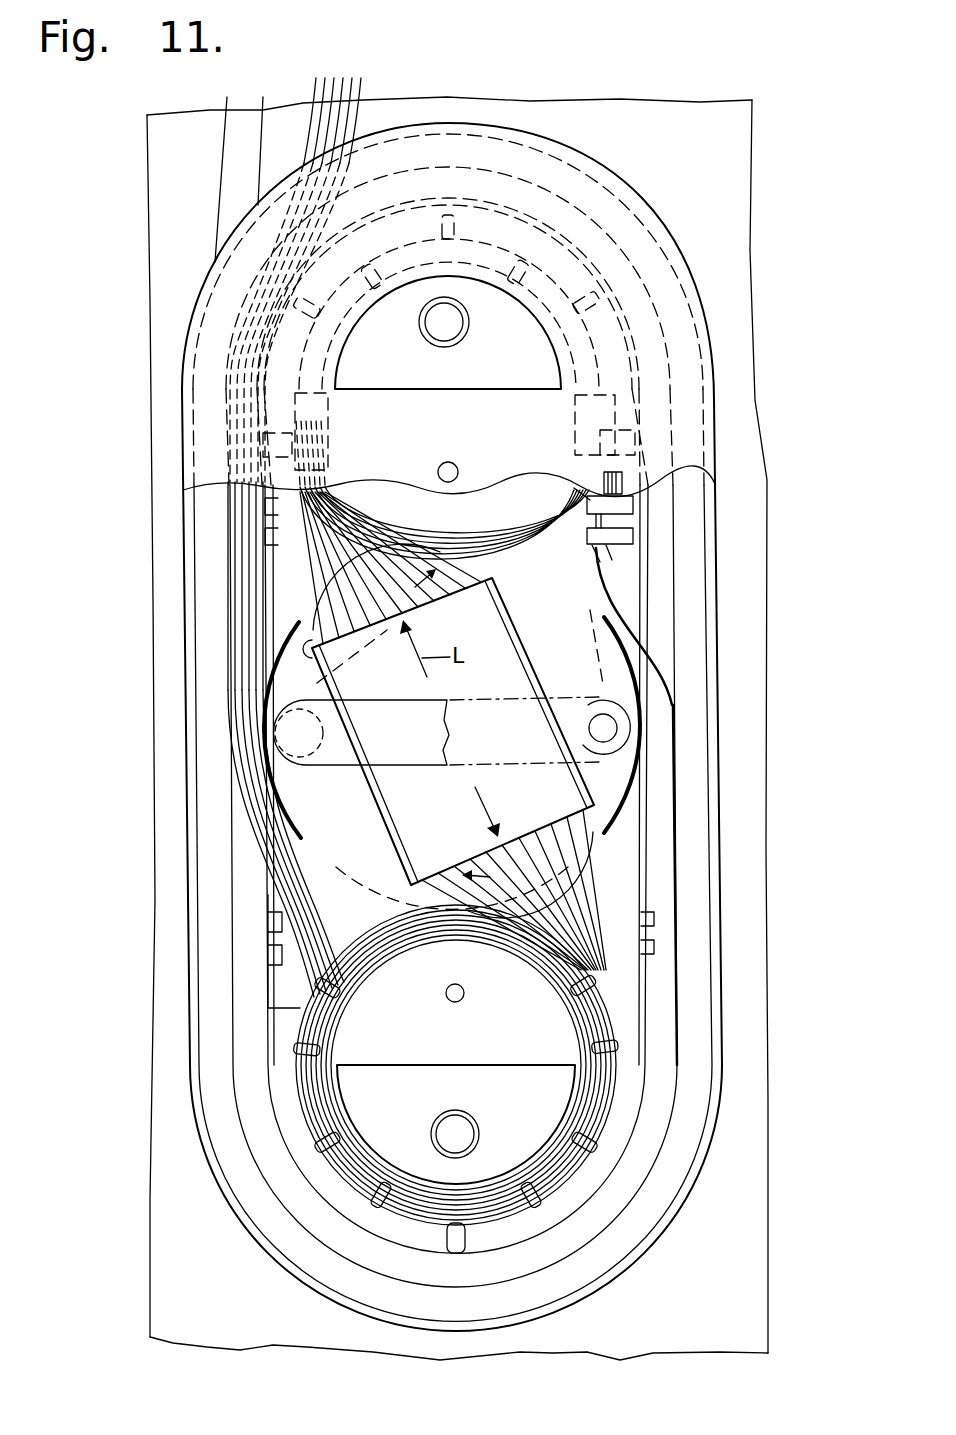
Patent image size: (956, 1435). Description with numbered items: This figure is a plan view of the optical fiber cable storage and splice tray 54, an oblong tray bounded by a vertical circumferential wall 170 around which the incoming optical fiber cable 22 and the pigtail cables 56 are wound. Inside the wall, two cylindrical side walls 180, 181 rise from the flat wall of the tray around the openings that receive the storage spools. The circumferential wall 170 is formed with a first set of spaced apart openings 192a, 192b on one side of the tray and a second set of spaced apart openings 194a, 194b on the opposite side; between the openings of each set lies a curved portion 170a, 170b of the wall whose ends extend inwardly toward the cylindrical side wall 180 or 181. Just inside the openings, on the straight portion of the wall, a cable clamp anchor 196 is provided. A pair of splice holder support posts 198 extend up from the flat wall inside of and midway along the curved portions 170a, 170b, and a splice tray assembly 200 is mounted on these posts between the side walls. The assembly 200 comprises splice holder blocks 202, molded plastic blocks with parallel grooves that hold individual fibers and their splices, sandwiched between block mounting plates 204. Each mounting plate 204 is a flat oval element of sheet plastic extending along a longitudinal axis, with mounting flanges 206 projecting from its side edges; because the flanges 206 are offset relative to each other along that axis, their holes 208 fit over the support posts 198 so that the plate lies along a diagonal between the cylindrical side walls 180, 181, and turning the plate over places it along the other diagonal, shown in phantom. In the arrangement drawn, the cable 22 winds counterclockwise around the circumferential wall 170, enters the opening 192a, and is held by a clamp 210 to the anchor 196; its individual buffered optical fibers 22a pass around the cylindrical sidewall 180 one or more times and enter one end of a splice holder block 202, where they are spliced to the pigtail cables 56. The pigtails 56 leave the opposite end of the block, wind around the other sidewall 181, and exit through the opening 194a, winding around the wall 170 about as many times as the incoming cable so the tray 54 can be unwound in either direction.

The optical fiber cable 22 is at (228, 98).
The buffered optical fibers 22a is at (617, 460).
The splice tray 54 is at (650, 197).
The pigtail cables 56 is at (362, 78).
The circumferential wall 170 is at (580, 418).
The curved portion of the circumferential wall 170a is at (630, 790).
The curved portion of the circumferential wall 170b is at (278, 657).
The cylindrical side wall 180 is at (503, 497).
The cylindrical side wall 181 is at (383, 920).
The opening 192a is at (637, 572).
The opening 192b is at (650, 868).
The opening 194a is at (270, 862).
The opening 194b is at (273, 568).
The cable clamp anchor 196 is at (268, 538).
The splice holder support posts 198 is at (313, 723).
The splice tray assembly 200 is at (305, 617).
The splice holder blocks 202 is at (497, 633).
The block mounting plates 204 is at (314, 652).
The mounting flanges 206 is at (460, 759).
The holes 208 is at (720, 710).
The clamp 210 is at (578, 513).